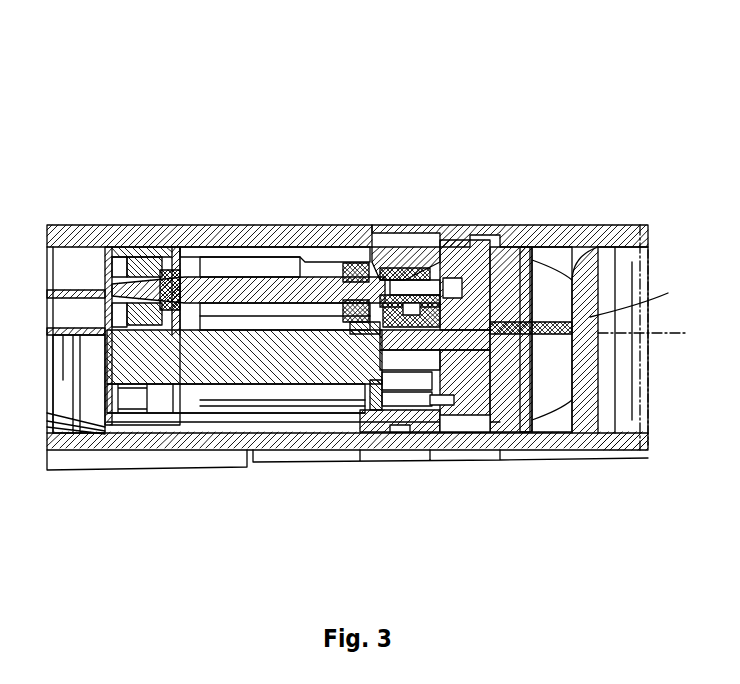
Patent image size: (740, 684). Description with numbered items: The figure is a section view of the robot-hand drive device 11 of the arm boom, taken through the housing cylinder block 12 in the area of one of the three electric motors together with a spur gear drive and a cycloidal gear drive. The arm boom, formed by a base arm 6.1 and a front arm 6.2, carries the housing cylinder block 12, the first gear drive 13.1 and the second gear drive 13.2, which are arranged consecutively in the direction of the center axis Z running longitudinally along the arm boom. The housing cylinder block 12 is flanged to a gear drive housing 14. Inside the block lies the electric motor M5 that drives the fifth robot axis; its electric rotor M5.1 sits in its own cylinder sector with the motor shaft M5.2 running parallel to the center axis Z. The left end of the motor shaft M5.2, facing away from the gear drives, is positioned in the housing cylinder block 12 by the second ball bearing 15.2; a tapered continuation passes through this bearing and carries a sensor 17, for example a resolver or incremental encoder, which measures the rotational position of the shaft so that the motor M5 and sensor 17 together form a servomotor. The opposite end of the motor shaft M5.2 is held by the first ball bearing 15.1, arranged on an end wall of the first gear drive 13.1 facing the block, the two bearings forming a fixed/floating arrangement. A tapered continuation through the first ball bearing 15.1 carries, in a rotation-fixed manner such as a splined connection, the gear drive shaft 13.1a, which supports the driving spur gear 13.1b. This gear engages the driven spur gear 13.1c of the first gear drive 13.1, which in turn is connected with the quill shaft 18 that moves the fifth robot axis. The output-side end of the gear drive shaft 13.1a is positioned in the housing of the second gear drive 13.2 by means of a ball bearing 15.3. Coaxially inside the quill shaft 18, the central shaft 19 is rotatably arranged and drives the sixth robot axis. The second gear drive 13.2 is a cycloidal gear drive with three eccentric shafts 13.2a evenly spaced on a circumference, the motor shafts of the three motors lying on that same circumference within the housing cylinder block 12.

The robot-hand drive device 11 is at (390, 96).
The base arm 6.1 is at (62, 225).
The front arm 6.2 is at (623, 226).
The housing cylinder block 12 is at (125, 367).
The first gear drive 13.1 is at (403, 257).
The gear drive shaft 13.1a is at (412, 257).
The driving spur gear 13.1b is at (430, 450).
The driven spur gear 13.1c is at (407, 450).
The second gear drive 13.2 is at (490, 260).
The eccentric shaft 13.2a is at (552, 327).
The gear drive housing 14 is at (368, 265).
The first ball bearing 15.1 is at (355, 265).
The second ball bearing 15.2 is at (185, 262).
The ball bearing 15.3 is at (440, 262).
The sensor 17 is at (128, 262).
The quill shaft 18 is at (557, 330).
The central shaft 19 is at (667, 294).
The electric motor M5 is at (246, 262).
The electric rotor M5.1 is at (203, 262).
The motor shaft M5.2 is at (300, 257).
The center axis Z is at (628, 453).